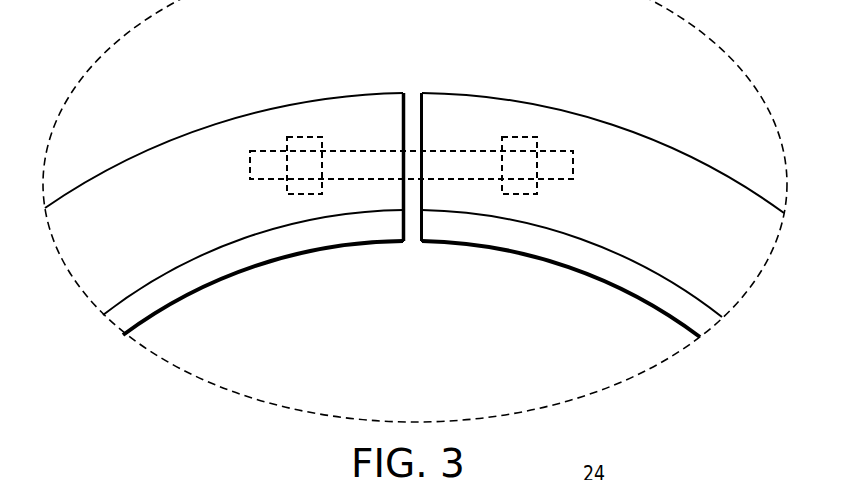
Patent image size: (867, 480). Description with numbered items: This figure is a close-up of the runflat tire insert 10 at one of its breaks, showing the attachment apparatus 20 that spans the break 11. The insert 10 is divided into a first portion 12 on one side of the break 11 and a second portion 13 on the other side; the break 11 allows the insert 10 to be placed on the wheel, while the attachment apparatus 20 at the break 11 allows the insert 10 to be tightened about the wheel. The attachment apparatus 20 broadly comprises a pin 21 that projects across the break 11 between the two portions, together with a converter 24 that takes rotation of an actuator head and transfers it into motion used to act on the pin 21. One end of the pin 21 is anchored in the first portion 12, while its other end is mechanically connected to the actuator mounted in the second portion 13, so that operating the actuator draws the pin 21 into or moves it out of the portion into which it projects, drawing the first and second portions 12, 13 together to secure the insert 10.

The runflat tire insert 10 is at (583, 97).
The break 11 is at (412, 94).
The first portion 12 is at (167, 220).
The second portion 13 is at (658, 220).
The attachment apparatus 20 is at (267, 138).
The pin 21 is at (362, 180).
The converter 24 is at (513, 136).